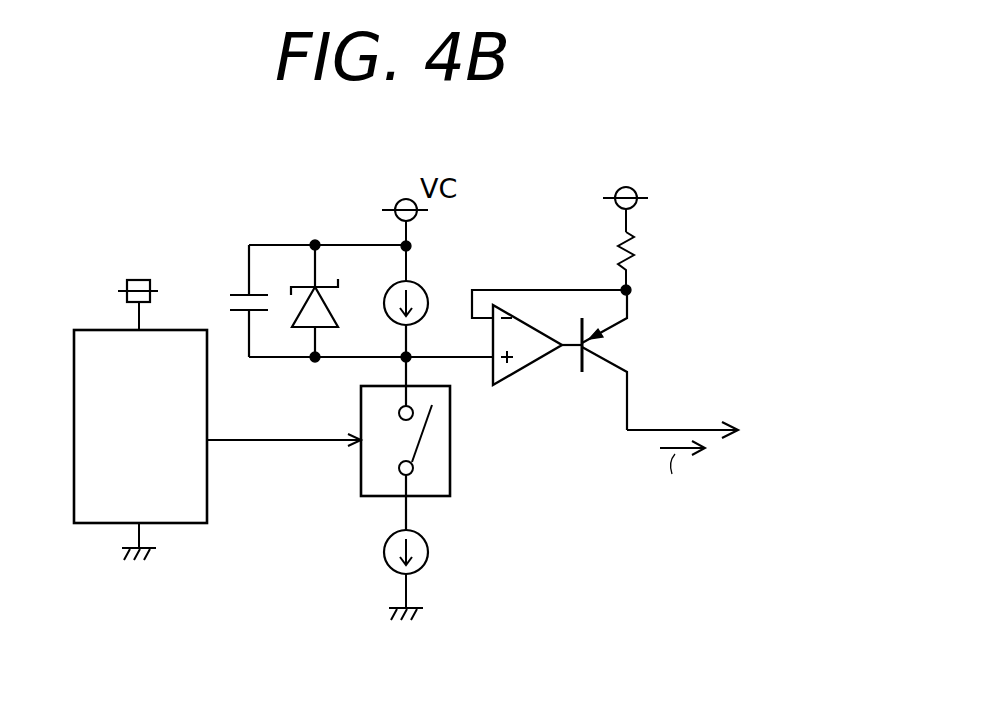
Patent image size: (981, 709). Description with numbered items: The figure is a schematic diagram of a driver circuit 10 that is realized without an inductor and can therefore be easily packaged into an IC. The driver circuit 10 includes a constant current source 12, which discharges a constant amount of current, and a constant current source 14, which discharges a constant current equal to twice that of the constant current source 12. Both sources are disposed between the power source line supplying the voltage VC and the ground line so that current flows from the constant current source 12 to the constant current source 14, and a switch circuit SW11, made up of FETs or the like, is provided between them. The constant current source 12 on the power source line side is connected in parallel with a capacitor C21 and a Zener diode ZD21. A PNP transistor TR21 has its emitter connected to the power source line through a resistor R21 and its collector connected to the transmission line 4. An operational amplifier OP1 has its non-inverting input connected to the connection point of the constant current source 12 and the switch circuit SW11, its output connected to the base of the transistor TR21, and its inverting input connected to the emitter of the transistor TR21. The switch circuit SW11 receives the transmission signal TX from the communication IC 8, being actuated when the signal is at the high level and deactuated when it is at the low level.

The transmission line 4 is at (665, 428).
The communication IC 8 is at (75, 328).
The driver circuit 10 is at (552, 199).
The constant current source 12 is at (418, 320).
The constant current source 14 is at (418, 570).
The capacitor C21 is at (232, 296).
The Zener diode ZD21 is at (300, 294).
The switch circuit SW11 is at (450, 467).
The resistor R21 is at (640, 253).
The operational amplifier OP1 is at (537, 368).
The PNP transistor TR21 is at (612, 349).